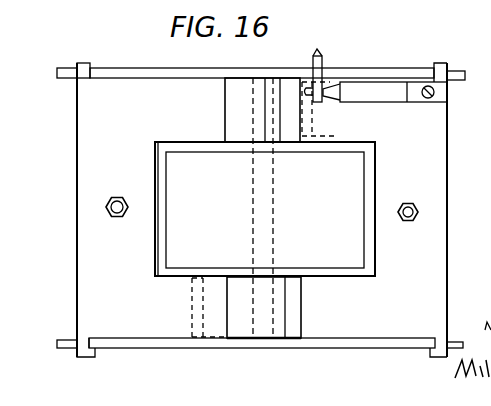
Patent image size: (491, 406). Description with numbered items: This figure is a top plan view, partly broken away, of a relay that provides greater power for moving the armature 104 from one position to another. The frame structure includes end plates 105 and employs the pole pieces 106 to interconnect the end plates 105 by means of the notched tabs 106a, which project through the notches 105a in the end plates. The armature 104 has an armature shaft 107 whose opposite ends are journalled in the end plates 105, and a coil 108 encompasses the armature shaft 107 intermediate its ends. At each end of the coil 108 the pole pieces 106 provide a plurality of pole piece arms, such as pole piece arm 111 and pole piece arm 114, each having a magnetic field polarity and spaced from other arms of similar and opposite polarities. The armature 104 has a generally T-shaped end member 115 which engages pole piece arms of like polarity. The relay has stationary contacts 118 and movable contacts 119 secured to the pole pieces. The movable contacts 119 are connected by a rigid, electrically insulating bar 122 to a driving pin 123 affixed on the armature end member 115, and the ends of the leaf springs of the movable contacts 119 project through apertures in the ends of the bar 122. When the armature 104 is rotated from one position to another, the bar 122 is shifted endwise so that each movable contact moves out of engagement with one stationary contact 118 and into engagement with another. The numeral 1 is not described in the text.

The relay assembly 1 is at (450, 152).
The armature 104 is at (283, 339).
The end plates 105 is at (166, 72).
The notches 105a is at (88, 342).
The pole pieces 106 is at (88, 147).
The notched tabs 106a is at (86, 62).
The armature shaft 107 is at (281, 181).
The coil 108 is at (240, 216).
The pole piece arm 111 is at (206, 109).
The pole piece arm 114 is at (350, 129).
The armature end member 115 is at (240, 115).
The stationary contacts 118 is at (375, 93).
The movable contacts 119 is at (333, 83).
The bar 122 is at (313, 58).
The driving pin 123 is at (319, 55).